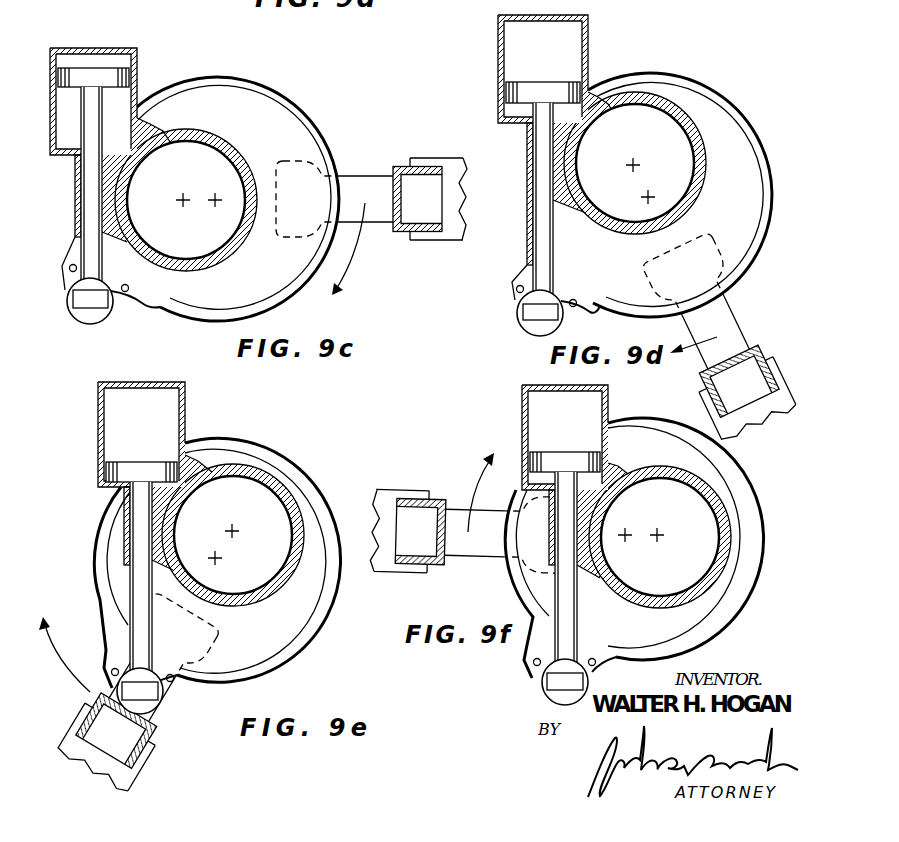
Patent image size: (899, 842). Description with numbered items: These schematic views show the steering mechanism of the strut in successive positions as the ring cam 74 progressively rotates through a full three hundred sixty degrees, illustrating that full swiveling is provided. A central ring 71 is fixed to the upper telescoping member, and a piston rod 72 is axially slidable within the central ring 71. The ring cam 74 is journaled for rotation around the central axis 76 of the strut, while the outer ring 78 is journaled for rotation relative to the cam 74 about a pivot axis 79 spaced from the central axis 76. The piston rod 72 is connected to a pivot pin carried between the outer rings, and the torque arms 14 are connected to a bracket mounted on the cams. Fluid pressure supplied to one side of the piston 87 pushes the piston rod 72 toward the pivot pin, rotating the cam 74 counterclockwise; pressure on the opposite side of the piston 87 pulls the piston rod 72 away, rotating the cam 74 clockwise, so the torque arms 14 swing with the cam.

In FIG. 9c, the torque arms 14 is at (440, 168).
In FIG. 9d, the torque arms 14 is at (775, 380).
In FIG. 9e, the torque arms 14 is at (148, 763).
In FIG. 9f, the torque arms 14 is at (405, 490).
In FIG. 9c, the central ring 71 is at (232, 247).
In FIG. 9d, the central ring 71 is at (705, 172).
In FIG. 9e, the central ring 71 is at (265, 470).
In FIG. 9f, the central ring 71 is at (732, 515).
In FIG. 9c, the piston rod 72 is at (92, 193).
In FIG. 9d, the piston rod 72 is at (550, 233).
In FIG. 9e, the piston rod 72 is at (138, 592).
In FIG. 9f, the piston rod 72 is at (568, 598).
In FIG. 9c, the ring cam 74 is at (225, 123).
In FIG. 9d, the ring cam 74 is at (737, 230).
In FIG. 9e, the ring cam 74 is at (250, 633).
In FIG. 9f, the ring cam 74 is at (626, 450).
In FIG. 9c, the central axis 76 is at (182, 196).
In FIG. 9d, the central axis 76 is at (634, 162).
In FIG. 9e, the central axis 76 is at (236, 528).
In FIG. 9f, the central axis 76 is at (657, 533).
In FIG. 9c, the outer ring 78 is at (298, 118).
In FIG. 9d, the outer ring 78 is at (725, 99).
In FIG. 9e, the outer ring 78 is at (313, 628).
In FIG. 9f, the outer ring 78 is at (740, 573).
In FIG. 9c, the pivot axis 79 is at (212, 202).
In FIG. 9d, the pivot axis 79 is at (647, 197).
In FIG. 9e, the pivot axis 79 is at (219, 562).
In FIG. 9f, the pivot axis 79 is at (625, 538).
In FIG. 9c, the piston 87 is at (84, 76).
In FIG. 9d, the piston 87 is at (543, 88).
In FIG. 9e, the piston 87 is at (139, 470).
In FIG. 9f, the piston 87 is at (565, 458).